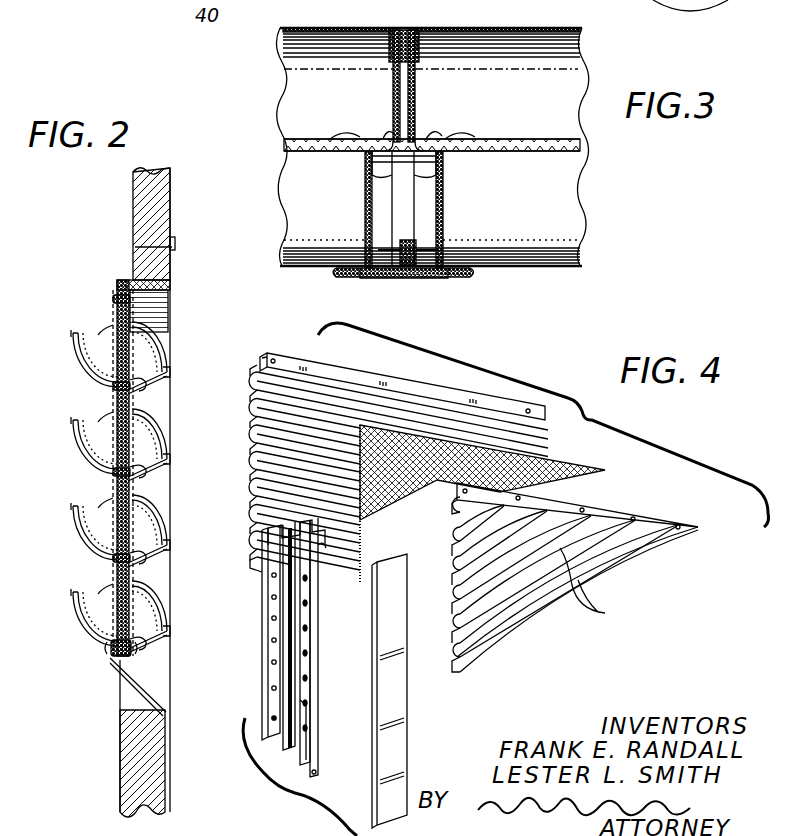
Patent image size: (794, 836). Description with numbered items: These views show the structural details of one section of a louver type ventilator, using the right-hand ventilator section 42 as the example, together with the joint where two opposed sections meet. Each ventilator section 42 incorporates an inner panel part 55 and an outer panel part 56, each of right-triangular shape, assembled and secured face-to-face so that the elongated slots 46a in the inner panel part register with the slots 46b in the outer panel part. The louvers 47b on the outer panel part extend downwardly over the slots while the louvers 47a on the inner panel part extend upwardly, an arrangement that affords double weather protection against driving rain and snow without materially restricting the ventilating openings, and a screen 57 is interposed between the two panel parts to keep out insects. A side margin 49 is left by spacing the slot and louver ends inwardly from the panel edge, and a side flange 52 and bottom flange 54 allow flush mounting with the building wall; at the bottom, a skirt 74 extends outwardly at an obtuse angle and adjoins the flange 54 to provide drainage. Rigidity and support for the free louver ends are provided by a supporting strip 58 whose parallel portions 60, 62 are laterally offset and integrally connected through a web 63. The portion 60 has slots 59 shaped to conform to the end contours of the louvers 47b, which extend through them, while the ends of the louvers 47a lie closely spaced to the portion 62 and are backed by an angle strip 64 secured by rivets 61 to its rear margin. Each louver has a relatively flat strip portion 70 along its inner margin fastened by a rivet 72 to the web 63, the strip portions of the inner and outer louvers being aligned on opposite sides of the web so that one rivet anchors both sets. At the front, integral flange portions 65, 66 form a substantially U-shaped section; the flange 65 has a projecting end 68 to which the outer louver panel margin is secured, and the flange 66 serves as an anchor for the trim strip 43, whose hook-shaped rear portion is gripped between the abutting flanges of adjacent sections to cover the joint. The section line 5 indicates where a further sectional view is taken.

In FIG. 2, the right-hand ventilator section 42 is at (172, 333).
In FIG. 3, the right-hand ventilator section 42 is at (610, 0).
In FIG. 3, the trim strip 43 is at (364, 276).
In FIG. 4, the trim strip 43 is at (402, 716).
In FIG. 2, the slots in inner panel part 46a is at (108, 326).
In FIG. 4, the slots in inner panel part 46a is at (246, 436).
In FIG. 2, the slots in outer panel part 46b is at (152, 392).
In FIG. 4, the slots in outer panel part 46b is at (246, 412).
In FIG. 2, the louvers on inner panel part 47a is at (78, 360).
In FIG. 3, the louvers on inner panel part 47a is at (528, 52).
In FIG. 4, the louvers on inner panel part 47a is at (247, 520).
In FIG. 2, the louvers on outer panel part 47b is at (171, 362).
In FIG. 3, the louvers on outer panel part 47b is at (543, 258).
In FIG. 4, the louvers on outer panel part 47b is at (605, 613).
In FIG. 2, the side margin 49 is at (128, 308).
In FIG. 2, the side flange 52 is at (175, 244).
In FIG. 4, the side flange 52 is at (398, 392).
In FIG. 2, the bottom flange 54 is at (168, 752).
In FIG. 4, the bottom flange 54 is at (480, 446).
In FIG. 4, the inner panel part 55 is at (370, 345).
In FIG. 4, the outer panel part 56 is at (625, 513).
In FIG. 3, the screen 57 is at (284, 146).
In FIG. 4, the screen 57 is at (548, 463).
In FIG. 3, the supporting strip 58 is at (444, 200).
In FIG. 4, the supporting strip 58 is at (320, 678).
In FIG. 4, the slots in supporting strip 59 is at (300, 622).
In FIG. 3, the portion of supporting strip 60 is at (444, 222).
In FIG. 3, the rivets 61 is at (417, 50).
In FIG. 4, the rivets 61 is at (270, 652).
In FIG. 3, the portion of supporting strip 62 is at (416, 104).
In FIG. 4, the portion of supporting strip 62 is at (322, 547).
In FIG. 3, the web 63 is at (444, 172).
In FIG. 3, the angle strip 64 is at (360, 28).
In FIG. 3, the flange portion 65 is at (440, 276).
In FIG. 4, the flange portion 65 is at (314, 645).
In FIG. 3, the flange portion 66 is at (418, 252).
In FIG. 4, the flange portion 66 is at (302, 706).
In FIG. 4, the projecting end of flange 68 is at (317, 778).
In FIG. 2, the flat strip portion 70 is at (135, 574).
In FIG. 3, the rivet 72 is at (433, 141).
In FIG. 2, the skirt 74 is at (148, 689).
In FIG. 4, the skirt 74 is at (512, 422).
In FIG. 3, the section line 5- 5 is at (418, 10).